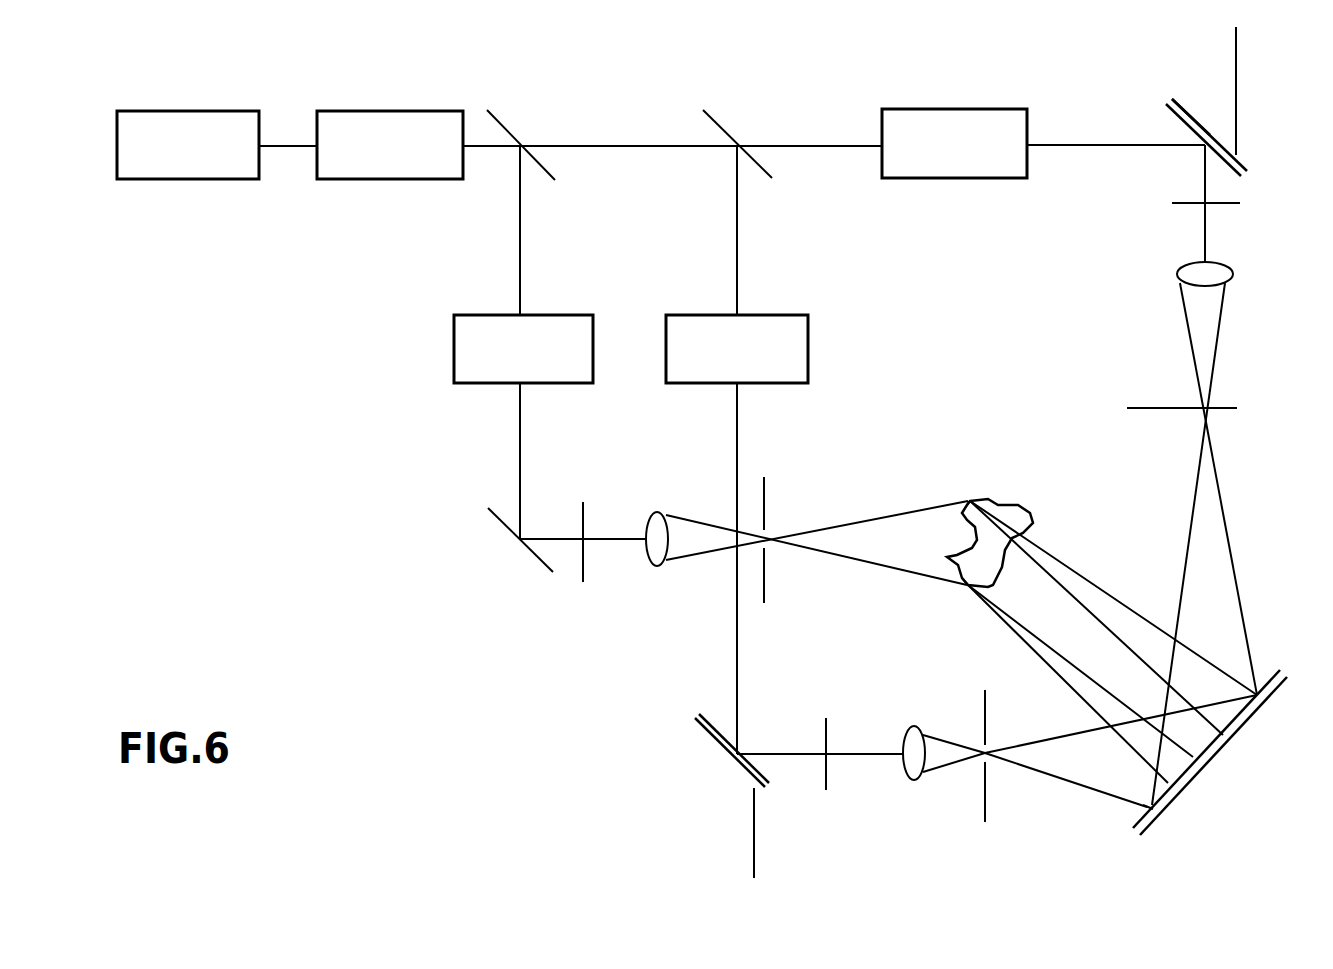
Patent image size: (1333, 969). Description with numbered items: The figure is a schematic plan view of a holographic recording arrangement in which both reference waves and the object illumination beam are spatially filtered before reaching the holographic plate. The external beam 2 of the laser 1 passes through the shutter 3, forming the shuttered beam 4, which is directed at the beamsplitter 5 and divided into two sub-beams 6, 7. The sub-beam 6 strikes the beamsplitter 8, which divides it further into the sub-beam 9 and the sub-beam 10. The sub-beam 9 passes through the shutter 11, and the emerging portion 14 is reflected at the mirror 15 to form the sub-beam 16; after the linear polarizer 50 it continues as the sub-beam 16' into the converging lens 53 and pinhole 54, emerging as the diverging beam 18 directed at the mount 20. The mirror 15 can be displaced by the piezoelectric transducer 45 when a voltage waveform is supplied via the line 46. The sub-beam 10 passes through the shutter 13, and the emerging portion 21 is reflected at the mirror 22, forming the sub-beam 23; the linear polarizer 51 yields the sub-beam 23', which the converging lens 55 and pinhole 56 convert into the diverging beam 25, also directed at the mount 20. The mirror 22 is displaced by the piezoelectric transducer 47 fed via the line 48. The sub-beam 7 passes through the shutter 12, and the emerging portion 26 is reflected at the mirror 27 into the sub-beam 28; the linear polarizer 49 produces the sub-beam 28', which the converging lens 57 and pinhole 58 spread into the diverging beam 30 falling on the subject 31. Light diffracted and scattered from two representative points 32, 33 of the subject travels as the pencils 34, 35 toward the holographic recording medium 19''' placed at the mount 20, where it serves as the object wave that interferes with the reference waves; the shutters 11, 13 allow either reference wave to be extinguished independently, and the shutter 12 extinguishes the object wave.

The laser 1 is at (222, 111).
The external beam 2 is at (303, 146).
The shutter 3 is at (395, 111).
The shuttered beam 4 is at (477, 150).
The beamsplitter 5 is at (512, 118).
The sub-beam 6 is at (622, 146).
The sub-beam 7 is at (521, 272).
The beamsplitter 8 is at (722, 118).
The sub-beam 9 is at (827, 146).
The sub-beam 10 is at (738, 203).
The shutter 11 is at (968, 109).
The shutter 12 is at (462, 335).
The shutter 13 is at (672, 335).
The emerging portion 14 is at (1104, 145).
The mirror 15 is at (1180, 118).
The sub-beam 16 is at (1187, 174).
The sub-beam 16' is at (1230, 232).
The diverging beam 18 is at (1213, 577).
The holographic recording medium 19''' is at (1110, 830).
The holographic plate mount 20 is at (1183, 795).
The emerging portion 21 is at (717, 568).
The mirror 22 is at (766, 780).
The sub-beam 23 is at (781, 738).
The sub-beam 23' is at (864, 772).
The diverging beam 25 is at (1055, 768).
The emerging portion 26 is at (521, 463).
The mirror 27 is at (496, 520).
The sub-beam 28 is at (551, 518).
The sub-beam 28' is at (614, 558).
The diverging beam 30 is at (884, 530).
The subject 31 is at (1022, 518).
The representative point 32 is at (946, 490).
The representative point 33 is at (968, 586).
The pencil 34 is at (1120, 610).
The pencil 35 is at (1073, 683).
The piezoelectric transducer 45 is at (1198, 115).
The line 46 is at (1238, 100).
The piezoelectric transducer 47 is at (698, 725).
The line 48 is at (752, 815).
The linear polarizer 49 is at (582, 568).
The linear polarizer 50 is at (1180, 204).
The linear polarizer 51 is at (832, 735).
The converging lens 53 is at (1211, 274).
The pinhole 54 is at (1245, 408).
The converging lens 55 is at (915, 769).
The pinhole 56 is at (988, 795).
The converging lens 57 is at (664, 520).
The pinhole 58 is at (768, 582).